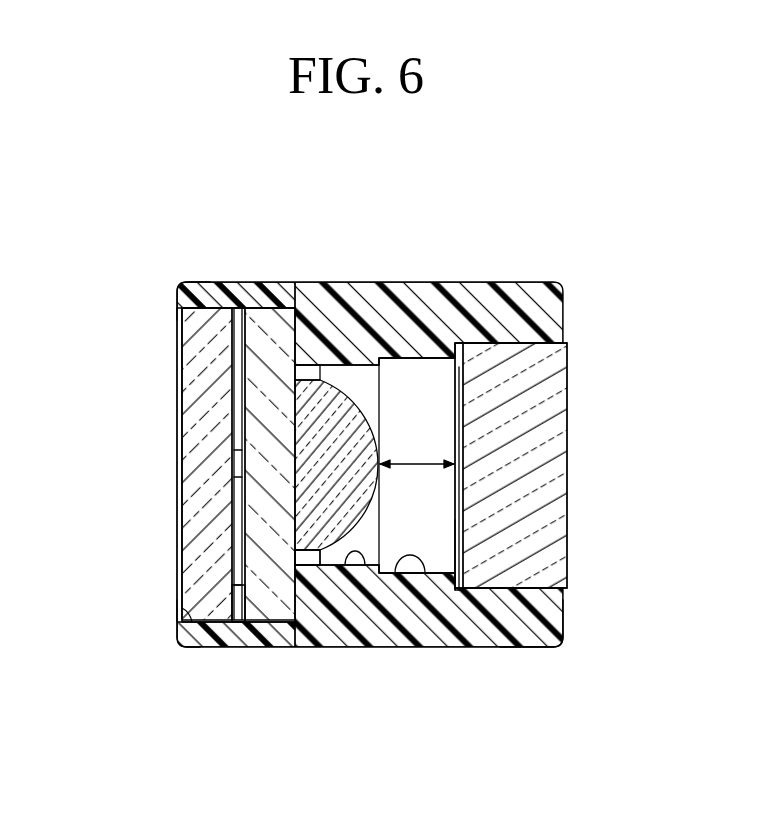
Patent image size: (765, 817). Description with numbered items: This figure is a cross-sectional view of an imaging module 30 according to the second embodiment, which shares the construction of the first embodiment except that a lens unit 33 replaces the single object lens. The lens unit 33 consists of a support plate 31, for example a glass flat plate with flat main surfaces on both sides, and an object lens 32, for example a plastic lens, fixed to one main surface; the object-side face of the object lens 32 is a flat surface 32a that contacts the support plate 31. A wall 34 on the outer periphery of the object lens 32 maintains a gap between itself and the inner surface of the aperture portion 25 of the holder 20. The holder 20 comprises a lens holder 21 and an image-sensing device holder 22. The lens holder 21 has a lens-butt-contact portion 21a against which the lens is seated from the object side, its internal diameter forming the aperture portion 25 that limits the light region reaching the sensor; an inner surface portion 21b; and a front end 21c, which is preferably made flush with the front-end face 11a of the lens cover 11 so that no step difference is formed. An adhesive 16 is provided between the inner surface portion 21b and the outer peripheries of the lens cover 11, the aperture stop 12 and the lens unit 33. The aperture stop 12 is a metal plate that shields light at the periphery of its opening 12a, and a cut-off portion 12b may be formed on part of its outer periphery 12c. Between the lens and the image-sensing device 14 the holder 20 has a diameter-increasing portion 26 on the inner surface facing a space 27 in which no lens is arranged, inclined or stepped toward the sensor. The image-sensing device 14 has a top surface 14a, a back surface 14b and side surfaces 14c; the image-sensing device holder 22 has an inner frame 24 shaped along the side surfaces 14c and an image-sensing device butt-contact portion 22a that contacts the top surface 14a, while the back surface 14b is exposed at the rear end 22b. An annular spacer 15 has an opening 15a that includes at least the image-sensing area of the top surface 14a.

The imaging module 30 is at (578, 222).
The holder 20 is at (387, 302).
The lens holder 21 is at (205, 640).
The lens-butt-contact portion 21a is at (293, 596).
The inner surface portion 21b is at (183, 611).
The front end 21c is at (176, 300).
The image-sensing device holder 22 is at (517, 630).
The image-sensing device butt-contact portion 22a is at (467, 578).
The rear end 22b is at (562, 636).
The lens cover 11 is at (208, 315).
The front-end face 11a is at (181, 406).
The aperture stop 12 is at (236, 348).
The opening 12a is at (233, 467).
The cut-off portion 12b is at (232, 594).
The outer periphery 12c is at (233, 307).
The lens unit 33 is at (311, 388).
The support plate 31 is at (270, 314).
The object lens 32 is at (340, 418).
The flat surface 32a is at (296, 509).
The wall 34 is at (304, 566).
The adhesive 16 is at (237, 600).
The spacer 15 is at (458, 356).
The opening 15a is at (466, 543).
The space 27 is at (432, 463).
The image-sensing device 14 is at (555, 427).
The top surface 14a is at (459, 406).
The back surface 14b is at (567, 373).
The side surfaces 14c is at (533, 338).
The inner frame 24 is at (517, 586).
The aperture portion 25 is at (355, 566).
The diameter-increasing portion 26 is at (410, 576).